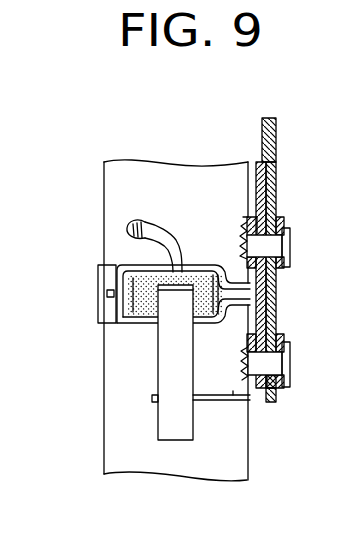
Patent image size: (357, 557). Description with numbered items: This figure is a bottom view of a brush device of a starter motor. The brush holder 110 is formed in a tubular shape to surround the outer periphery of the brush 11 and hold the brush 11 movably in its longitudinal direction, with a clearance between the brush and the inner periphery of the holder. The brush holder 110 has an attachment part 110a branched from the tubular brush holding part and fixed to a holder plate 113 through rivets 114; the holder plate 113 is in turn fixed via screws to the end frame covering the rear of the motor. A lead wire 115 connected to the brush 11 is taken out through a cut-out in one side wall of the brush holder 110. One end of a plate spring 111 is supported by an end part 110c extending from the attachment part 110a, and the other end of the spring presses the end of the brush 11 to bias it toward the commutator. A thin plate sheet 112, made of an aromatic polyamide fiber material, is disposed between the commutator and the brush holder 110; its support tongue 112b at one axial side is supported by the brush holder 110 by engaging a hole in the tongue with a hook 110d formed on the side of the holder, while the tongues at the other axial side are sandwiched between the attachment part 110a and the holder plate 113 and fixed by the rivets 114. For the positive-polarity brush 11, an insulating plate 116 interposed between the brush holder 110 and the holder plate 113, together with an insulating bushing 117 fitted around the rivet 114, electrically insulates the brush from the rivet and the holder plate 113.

The thin plate sheet 112 is at (147, 178).
The attachment part 110a is at (246, 224).
The holder plate 113 is at (277, 163).
The insulating bushing 117 is at (284, 217).
The rivets 114 is at (286, 247).
The insulating plate 116 is at (277, 300).
The lead wire 115 is at (128, 230).
The support tongue 112b is at (101, 278).
The hook 110d is at (106, 294).
The brush 11 is at (144, 310).
The brush holder 110 is at (143, 322).
The plate spring 111 is at (178, 422).
The end part 110c is at (223, 402).